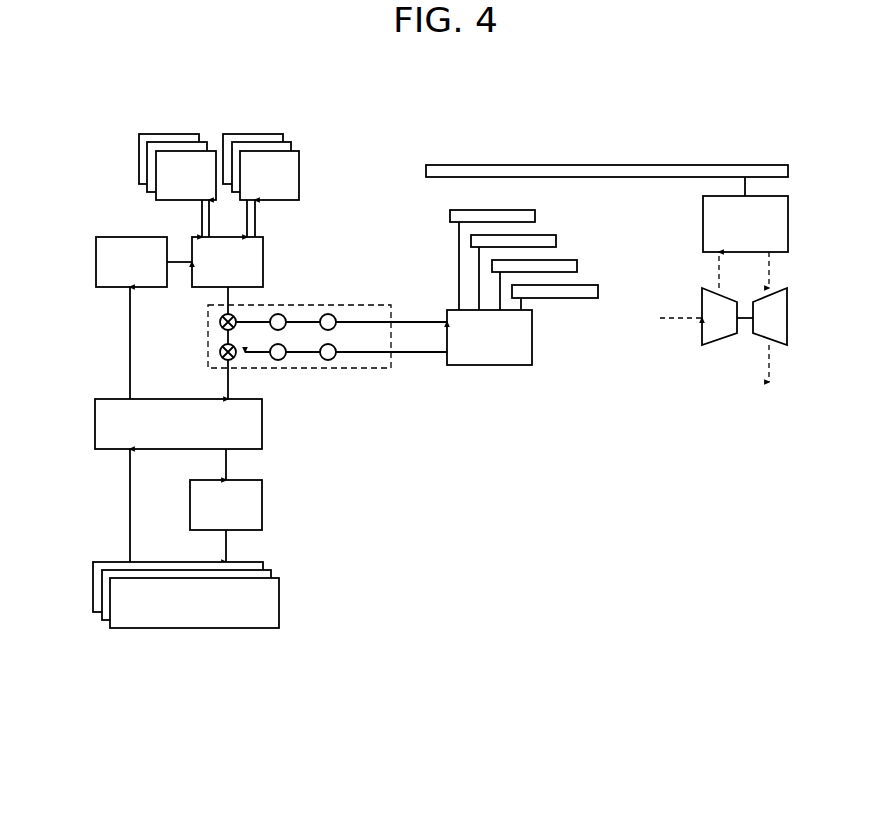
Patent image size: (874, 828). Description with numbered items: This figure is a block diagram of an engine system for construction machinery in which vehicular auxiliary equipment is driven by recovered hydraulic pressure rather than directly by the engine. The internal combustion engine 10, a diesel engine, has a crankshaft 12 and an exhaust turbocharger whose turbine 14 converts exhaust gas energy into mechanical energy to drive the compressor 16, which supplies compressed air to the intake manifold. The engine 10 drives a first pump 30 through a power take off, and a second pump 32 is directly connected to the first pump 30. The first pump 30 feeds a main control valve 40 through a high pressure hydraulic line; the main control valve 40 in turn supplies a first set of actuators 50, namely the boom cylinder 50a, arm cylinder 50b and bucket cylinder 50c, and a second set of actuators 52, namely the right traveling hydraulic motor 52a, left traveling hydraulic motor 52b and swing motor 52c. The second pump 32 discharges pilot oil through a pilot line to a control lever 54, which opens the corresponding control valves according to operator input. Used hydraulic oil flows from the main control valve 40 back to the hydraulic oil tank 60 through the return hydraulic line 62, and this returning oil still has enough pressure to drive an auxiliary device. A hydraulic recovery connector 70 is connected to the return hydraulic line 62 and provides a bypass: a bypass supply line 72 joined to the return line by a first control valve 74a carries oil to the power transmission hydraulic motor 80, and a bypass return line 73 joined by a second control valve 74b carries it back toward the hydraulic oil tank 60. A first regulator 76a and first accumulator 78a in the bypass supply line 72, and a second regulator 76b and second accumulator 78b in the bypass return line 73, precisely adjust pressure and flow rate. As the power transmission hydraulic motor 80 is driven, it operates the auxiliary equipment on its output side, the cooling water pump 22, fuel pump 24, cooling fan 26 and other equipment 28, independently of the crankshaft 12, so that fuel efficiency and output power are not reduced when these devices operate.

The internal combustion engine 10 is at (788, 218).
The crankshaft 12 is at (788, 171).
The turbine 14 is at (787, 318).
The compressor 16 is at (722, 345).
The cooling water pump 22 is at (535, 216).
The fuel pump 24 is at (556, 241).
The cooling fan 26 is at (577, 266).
The other equipment 28 is at (598, 291).
The first pump 30 is at (96, 262).
The second pump 32 is at (262, 505).
The main control valve 40 is at (263, 247).
The actuators 50 is at (134, 167).
The boom cylinder 50a is at (139, 143).
The arm cylinder 50b is at (147, 165).
The bucket cylinder 50c is at (156, 186).
The actuators 52 is at (307, 158).
The right traveling hydraulic motor 52a is at (283, 138).
The left traveling hydraulic motor 52b is at (291, 146).
The swing motor 52c is at (297, 175).
The control lever 54 is at (279, 602).
The hydraulic oil tank 60 is at (95, 424).
The return hydraulic line 62 is at (227, 381).
The hydraulic recovery connector 70 is at (355, 368).
The bypass supply line 72 is at (372, 322).
The bypass return line 73 is at (372, 352).
The first control valve 74a is at (220, 322).
The second control valve 74b is at (220, 352).
The first regulator 76a is at (281, 314).
The second regulator 76b is at (283, 360).
The first accumulator 78a is at (331, 314).
The second accumulator 78b is at (328, 360).
The power transmission hydraulic motor 80 is at (532, 340).